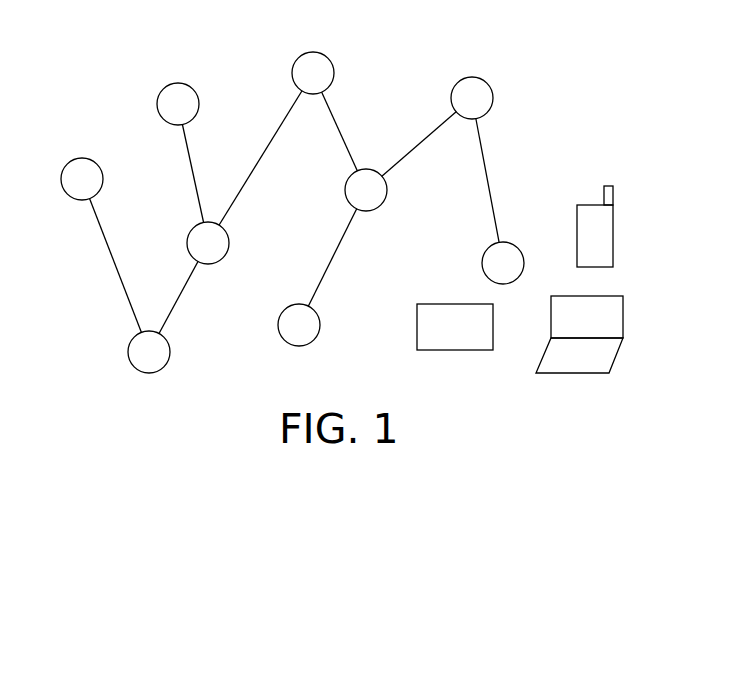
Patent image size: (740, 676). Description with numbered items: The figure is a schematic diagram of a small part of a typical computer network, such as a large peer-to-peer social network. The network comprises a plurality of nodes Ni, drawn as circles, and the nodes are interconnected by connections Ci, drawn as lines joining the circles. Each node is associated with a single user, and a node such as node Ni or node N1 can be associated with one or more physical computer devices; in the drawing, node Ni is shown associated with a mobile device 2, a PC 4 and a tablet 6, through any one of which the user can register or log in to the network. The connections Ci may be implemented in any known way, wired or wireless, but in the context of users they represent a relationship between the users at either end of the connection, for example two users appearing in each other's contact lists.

The connection Ci is at (423, 140).
The node Ni is at (488, 101).
The first node N1 is at (482, 260).
The mobile device 2 is at (609, 239).
The PC 4 is at (579, 367).
The tablet 6 is at (458, 341).